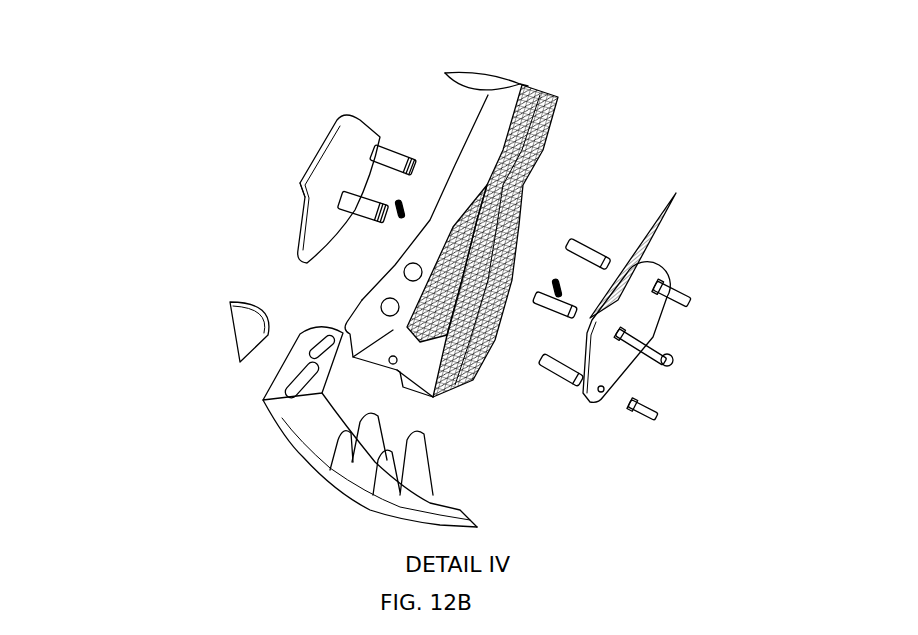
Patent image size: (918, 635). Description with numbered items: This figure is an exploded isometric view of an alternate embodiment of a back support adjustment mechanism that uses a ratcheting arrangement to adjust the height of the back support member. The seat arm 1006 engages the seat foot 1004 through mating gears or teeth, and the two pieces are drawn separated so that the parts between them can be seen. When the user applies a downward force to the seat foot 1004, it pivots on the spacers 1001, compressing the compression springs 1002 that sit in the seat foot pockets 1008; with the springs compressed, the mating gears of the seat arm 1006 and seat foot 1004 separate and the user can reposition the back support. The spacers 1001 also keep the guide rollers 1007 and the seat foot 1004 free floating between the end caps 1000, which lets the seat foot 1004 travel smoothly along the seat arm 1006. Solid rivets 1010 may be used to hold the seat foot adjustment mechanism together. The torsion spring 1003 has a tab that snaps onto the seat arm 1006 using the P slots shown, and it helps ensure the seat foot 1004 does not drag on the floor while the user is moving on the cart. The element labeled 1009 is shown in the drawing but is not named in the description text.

The end cap 1000 is at (342, 167).
The spacer 1001 is at (547, 358).
The compression spring 1002 is at (585, 317).
The torsion spring 1003 is at (316, 366).
The seat foot 1004 is at (517, 220).
The seat arm 1006 is at (488, 148).
The guide roller 1007 is at (393, 158).
The seat foot pocket 1008 is at (498, 254).
The hinge block with holes 1009 is at (393, 307).
The solid rivet 1010 is at (636, 410).